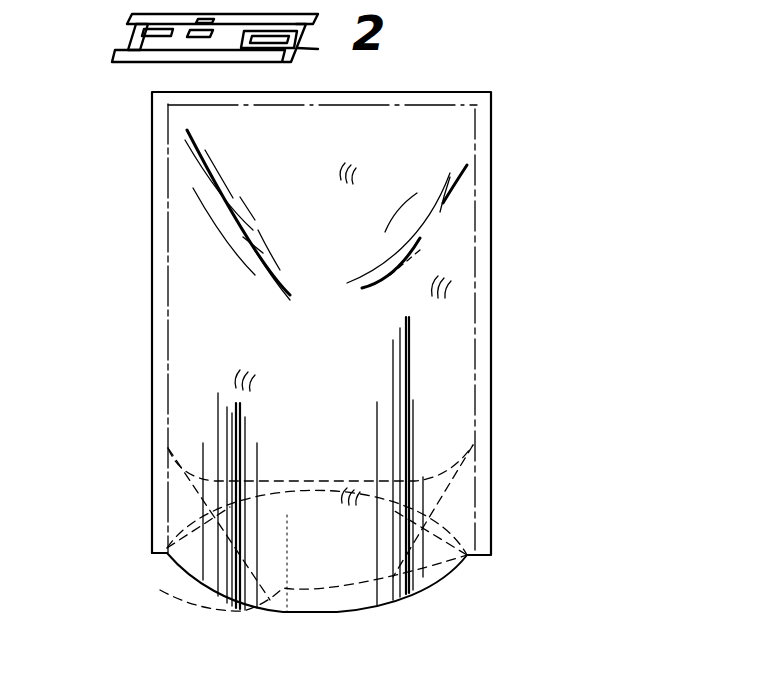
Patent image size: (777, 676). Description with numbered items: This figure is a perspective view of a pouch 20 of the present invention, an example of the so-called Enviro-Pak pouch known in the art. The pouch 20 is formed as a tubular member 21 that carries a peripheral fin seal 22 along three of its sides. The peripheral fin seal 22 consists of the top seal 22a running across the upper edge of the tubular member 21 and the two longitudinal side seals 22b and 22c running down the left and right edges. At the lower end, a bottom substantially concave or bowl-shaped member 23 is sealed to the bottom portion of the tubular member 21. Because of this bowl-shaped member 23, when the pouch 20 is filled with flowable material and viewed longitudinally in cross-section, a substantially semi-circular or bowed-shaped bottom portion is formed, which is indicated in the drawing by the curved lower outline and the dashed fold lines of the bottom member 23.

The pouch 20 is at (606, 283).
The tubular member 21 is at (197, 333).
The peripheral fin seal 22 is at (151, 191).
The top seal 22a is at (387, 100).
The longitudinal side seal 22b is at (150, 265).
The longitudinal side seal 22c is at (477, 443).
The bottom concave member 23 is at (160, 590).